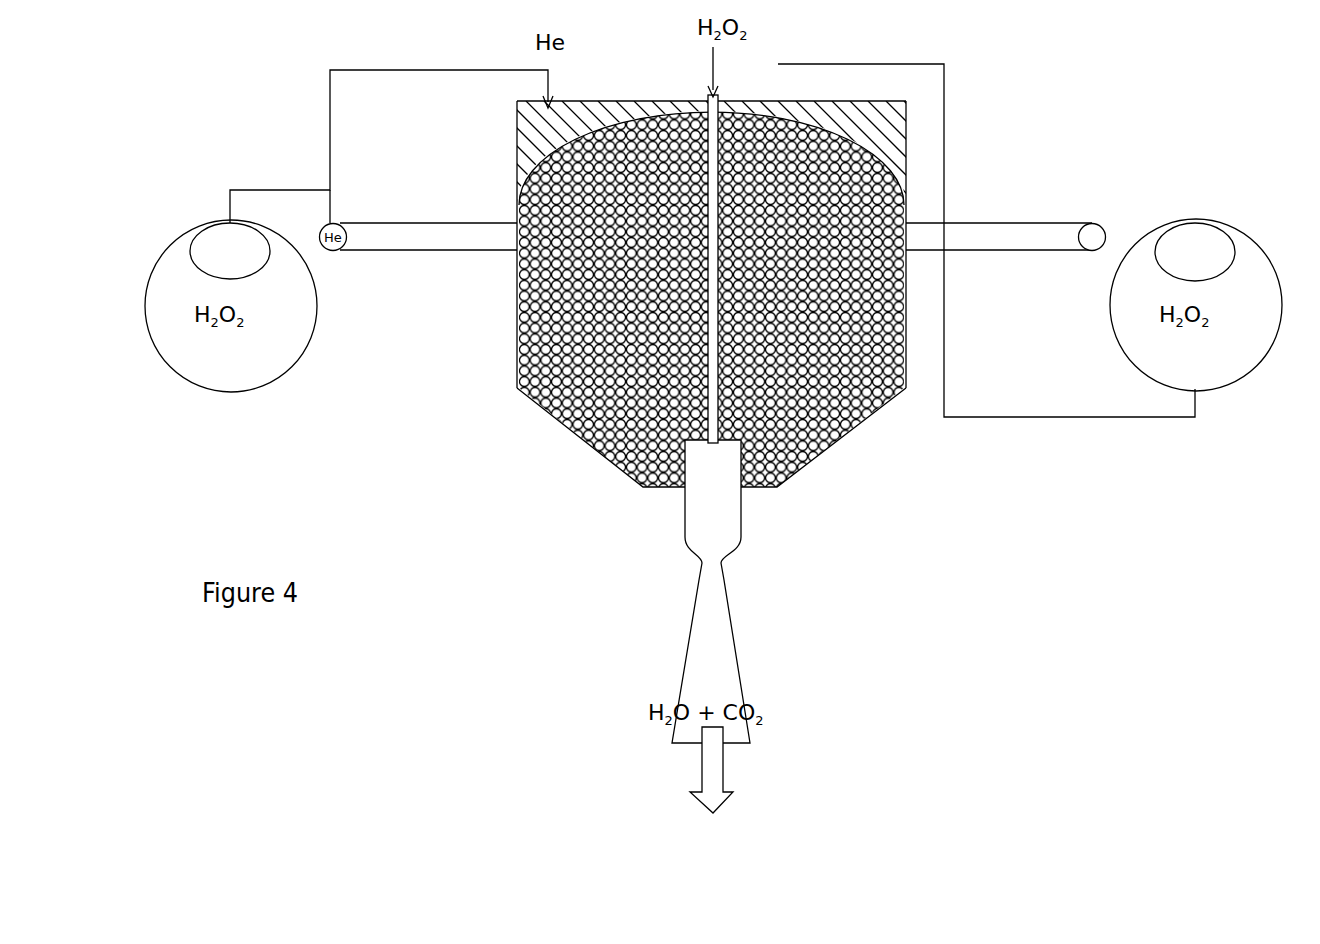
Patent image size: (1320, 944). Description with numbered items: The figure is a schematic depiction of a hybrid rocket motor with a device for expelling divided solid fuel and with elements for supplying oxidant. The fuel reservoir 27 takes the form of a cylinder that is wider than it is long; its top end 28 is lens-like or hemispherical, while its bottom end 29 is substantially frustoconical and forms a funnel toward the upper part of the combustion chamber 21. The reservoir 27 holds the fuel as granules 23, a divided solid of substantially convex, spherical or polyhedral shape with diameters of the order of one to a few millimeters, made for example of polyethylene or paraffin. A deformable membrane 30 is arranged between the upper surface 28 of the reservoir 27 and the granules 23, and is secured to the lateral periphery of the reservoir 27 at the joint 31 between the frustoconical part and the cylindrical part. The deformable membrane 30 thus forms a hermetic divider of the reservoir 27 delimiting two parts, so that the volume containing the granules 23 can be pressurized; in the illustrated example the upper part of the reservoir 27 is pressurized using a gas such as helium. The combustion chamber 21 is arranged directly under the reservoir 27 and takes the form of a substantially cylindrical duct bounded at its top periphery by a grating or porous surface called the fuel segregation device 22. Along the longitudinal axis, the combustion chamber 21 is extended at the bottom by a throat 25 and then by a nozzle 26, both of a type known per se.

The combustion chamber 21 is at (743, 490).
The fuel segregation device 22 is at (682, 533).
The granules 23 is at (870, 401).
The throat 25 is at (723, 556).
The nozzle 26 is at (740, 612).
The fuel reservoir 27 is at (908, 290).
The top end 28 is at (830, 105).
The bottom end 29 is at (600, 452).
The deformable membrane 30 is at (870, 125).
The joint 31 is at (516, 388).